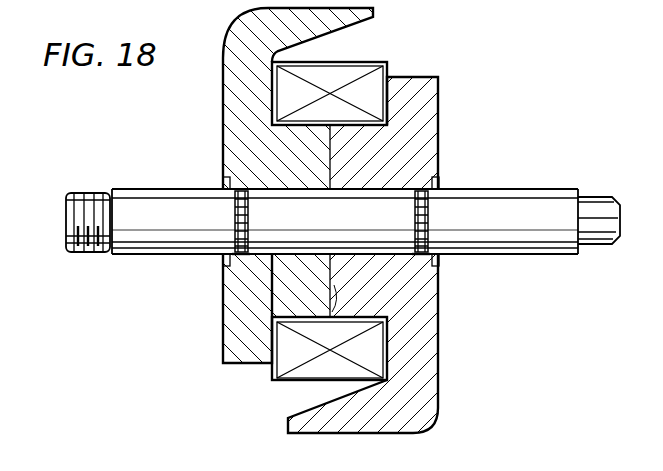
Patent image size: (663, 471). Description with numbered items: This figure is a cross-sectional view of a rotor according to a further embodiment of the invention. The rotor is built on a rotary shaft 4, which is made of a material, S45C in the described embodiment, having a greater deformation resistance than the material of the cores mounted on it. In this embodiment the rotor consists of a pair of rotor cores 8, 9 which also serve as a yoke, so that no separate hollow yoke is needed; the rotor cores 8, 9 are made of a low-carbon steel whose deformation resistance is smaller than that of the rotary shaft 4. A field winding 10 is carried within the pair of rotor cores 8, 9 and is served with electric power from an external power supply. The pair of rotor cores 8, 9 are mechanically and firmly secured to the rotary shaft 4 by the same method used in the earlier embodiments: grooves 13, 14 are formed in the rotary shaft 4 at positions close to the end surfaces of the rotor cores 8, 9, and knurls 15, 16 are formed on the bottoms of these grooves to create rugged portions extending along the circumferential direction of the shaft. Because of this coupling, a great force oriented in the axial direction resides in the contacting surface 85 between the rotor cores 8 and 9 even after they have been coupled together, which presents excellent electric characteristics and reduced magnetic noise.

The rotary shaft 4 is at (512, 200).
The rotor core 8 is at (228, 138).
The rotor core 9 is at (427, 133).
The field winding 10 is at (356, 67).
The contacting surface 85 is at (275, 372).
The groove 13 is at (243, 250).
The groove 14 is at (423, 257).
The knurl 15 is at (233, 233).
The knurl 16 is at (437, 238).